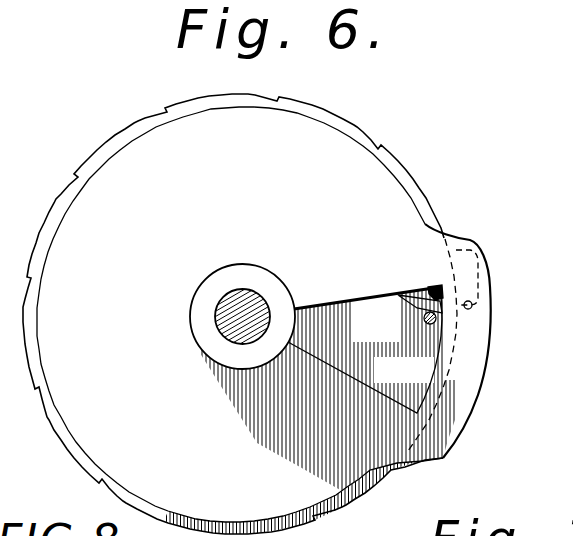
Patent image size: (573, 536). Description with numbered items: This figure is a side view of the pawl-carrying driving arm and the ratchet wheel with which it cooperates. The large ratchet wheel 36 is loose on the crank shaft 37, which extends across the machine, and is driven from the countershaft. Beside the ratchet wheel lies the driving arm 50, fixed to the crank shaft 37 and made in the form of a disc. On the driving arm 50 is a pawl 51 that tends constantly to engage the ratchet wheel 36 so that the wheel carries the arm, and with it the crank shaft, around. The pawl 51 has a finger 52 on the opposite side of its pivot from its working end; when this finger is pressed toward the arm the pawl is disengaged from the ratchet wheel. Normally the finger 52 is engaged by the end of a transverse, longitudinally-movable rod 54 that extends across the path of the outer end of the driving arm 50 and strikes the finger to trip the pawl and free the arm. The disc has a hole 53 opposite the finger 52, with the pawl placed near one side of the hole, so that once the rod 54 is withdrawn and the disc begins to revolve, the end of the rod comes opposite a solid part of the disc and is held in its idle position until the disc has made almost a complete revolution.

The ratchet wheel 36 is at (421, 200).
The crank shaft 37 is at (230, 321).
The driving arm 50 is at (245, 314).
The pawl 51 is at (443, 297).
The finger 52 is at (420, 299).
The hole 53 is at (392, 269).
The rod 54 is at (422, 319).